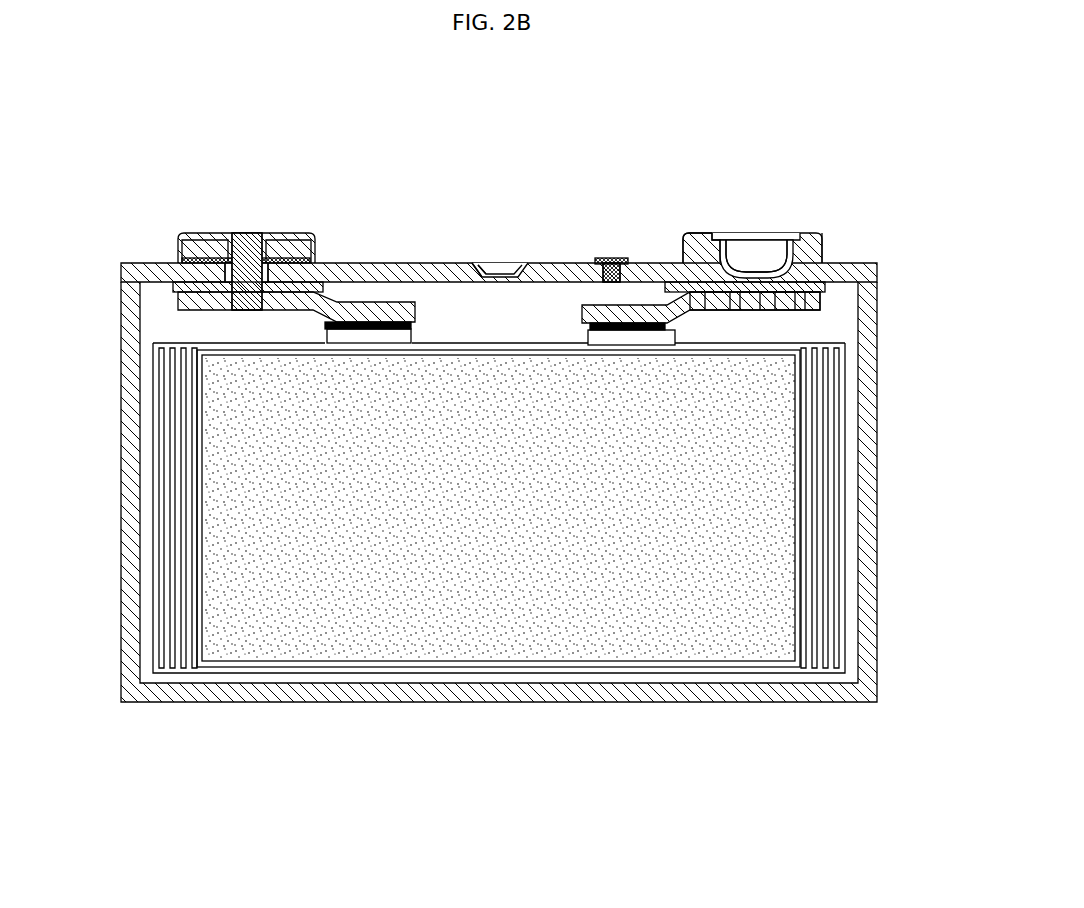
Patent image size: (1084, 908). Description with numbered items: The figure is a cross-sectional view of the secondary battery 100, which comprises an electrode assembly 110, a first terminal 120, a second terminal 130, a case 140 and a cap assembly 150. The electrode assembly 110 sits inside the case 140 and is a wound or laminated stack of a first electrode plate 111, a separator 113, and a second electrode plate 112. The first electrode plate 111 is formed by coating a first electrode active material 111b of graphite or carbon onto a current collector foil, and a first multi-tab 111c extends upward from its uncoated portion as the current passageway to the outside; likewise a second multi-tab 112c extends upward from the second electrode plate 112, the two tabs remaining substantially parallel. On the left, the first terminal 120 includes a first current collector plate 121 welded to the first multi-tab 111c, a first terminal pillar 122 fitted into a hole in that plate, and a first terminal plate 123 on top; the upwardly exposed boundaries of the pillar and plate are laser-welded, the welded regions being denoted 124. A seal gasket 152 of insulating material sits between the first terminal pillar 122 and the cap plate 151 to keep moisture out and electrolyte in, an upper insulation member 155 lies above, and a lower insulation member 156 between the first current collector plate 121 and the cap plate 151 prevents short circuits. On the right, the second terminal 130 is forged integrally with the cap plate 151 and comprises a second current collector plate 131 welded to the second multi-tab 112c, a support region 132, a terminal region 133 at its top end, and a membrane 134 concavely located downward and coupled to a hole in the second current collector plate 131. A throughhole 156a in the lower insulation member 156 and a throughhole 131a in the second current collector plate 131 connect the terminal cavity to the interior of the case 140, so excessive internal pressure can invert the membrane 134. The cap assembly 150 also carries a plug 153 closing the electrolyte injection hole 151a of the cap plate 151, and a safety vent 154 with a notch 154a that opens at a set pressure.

The secondary battery 100 is at (922, 96).
The electrode assembly 110 is at (600, 676).
The first electrode plate 111 is at (196, 370).
The first electrode active material 111b is at (383, 635).
The first multi-tab 111c is at (320, 331).
The second electrode plate 112 is at (806, 372).
The second multi-tab 112c is at (665, 340).
The separator 113 is at (460, 667).
The first terminal 120 is at (306, 156).
The first current collector plate 121 is at (415, 313).
The first terminal pillar 122 is at (210, 233).
The first terminal plate 123 is at (290, 233).
The welded regions 124 is at (259, 236).
The second terminal 130 is at (797, 228).
The second current collector plate 131 is at (582, 314).
The throughhole 131a is at (820, 320).
The support region 132 is at (683, 252).
The terminal region 133 is at (704, 245).
The membrane 134 is at (748, 255).
The case 140 is at (870, 432).
The cap assembly 150 is at (878, 252).
The cap plate 151 is at (425, 263).
The electrolyte injection hole 151a is at (603, 282).
The seal gasket 152 is at (300, 274).
The plug 153 is at (607, 258).
The safety vent 154 is at (520, 266).
The notch 154a is at (483, 267).
The upper insulation member 155 is at (312, 260).
The lower insulation member 156 is at (178, 289).
The throughhole 156a is at (822, 240).